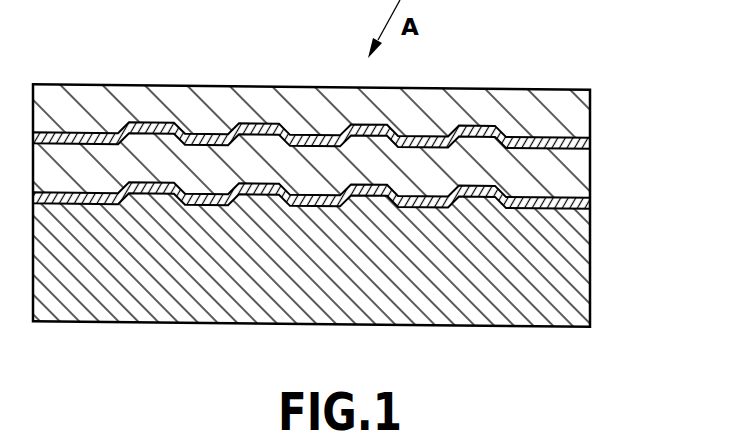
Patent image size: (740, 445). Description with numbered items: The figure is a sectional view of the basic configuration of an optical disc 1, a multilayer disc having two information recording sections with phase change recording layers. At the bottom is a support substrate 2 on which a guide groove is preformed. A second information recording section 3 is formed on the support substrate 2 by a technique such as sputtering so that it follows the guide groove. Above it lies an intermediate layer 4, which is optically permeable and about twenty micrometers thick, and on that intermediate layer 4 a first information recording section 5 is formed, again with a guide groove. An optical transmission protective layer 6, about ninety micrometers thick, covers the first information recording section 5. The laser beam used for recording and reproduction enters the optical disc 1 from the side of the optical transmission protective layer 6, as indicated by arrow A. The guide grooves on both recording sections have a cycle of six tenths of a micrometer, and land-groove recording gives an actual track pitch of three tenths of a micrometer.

The optical disc 1 is at (263, 55).
The support substrate 2 is at (580, 260).
The second information recording section 3 is at (590, 194).
The intermediate layer 4 is at (580, 171).
The first information recording section 5 is at (590, 135).
The optical transmission protective layer 6 is at (580, 110).